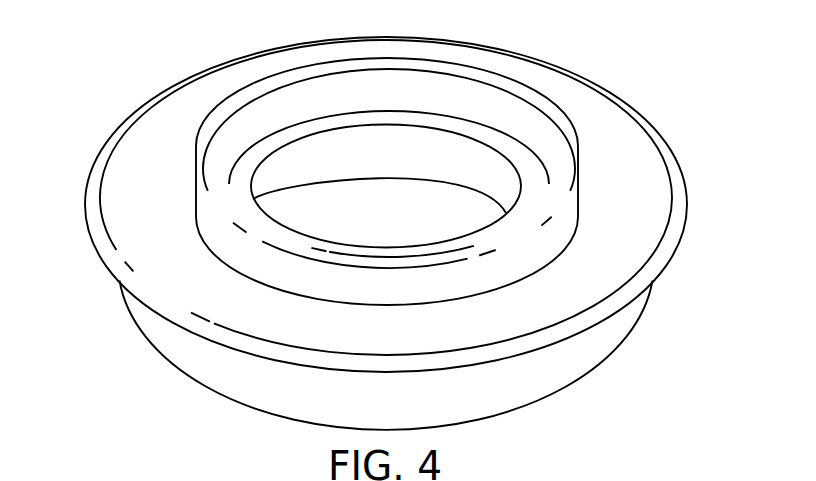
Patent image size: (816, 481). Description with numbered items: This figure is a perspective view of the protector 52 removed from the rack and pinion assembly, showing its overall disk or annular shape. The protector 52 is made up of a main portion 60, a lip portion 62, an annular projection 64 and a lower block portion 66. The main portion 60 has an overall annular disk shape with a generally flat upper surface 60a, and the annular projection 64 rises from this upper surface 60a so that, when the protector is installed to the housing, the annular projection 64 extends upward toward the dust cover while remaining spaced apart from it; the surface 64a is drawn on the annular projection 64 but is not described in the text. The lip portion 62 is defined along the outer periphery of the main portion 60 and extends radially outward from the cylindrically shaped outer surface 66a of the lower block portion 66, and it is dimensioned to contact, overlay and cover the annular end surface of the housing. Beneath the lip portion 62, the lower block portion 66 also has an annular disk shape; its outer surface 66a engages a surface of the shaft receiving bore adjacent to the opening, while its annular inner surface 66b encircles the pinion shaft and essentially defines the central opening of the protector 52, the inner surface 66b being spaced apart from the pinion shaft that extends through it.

The protector 52 is at (405, 220).
The main portion 60 is at (376, 197).
The upper surface 60a is at (140, 160).
The lip portion 62 is at (687, 175).
The annular projection 64 is at (482, 76).
The annular top surface of boss 64a is at (302, 103).
The lower block portion 66 is at (407, 355).
The outer surface 66a is at (567, 365).
The inner surface 66b is at (493, 184).